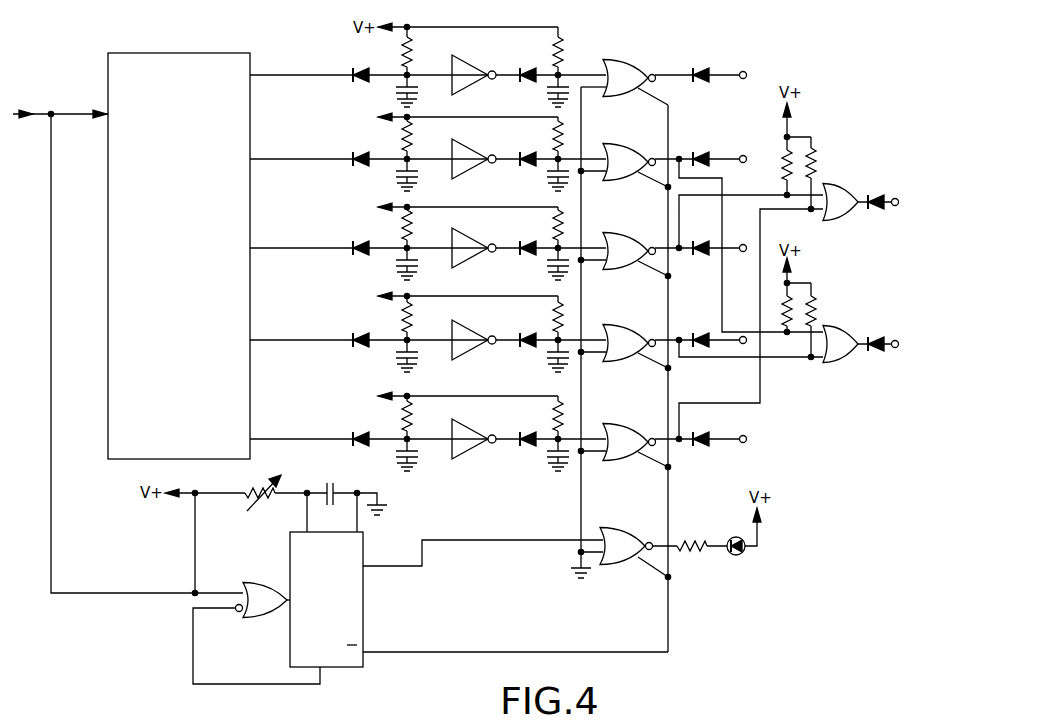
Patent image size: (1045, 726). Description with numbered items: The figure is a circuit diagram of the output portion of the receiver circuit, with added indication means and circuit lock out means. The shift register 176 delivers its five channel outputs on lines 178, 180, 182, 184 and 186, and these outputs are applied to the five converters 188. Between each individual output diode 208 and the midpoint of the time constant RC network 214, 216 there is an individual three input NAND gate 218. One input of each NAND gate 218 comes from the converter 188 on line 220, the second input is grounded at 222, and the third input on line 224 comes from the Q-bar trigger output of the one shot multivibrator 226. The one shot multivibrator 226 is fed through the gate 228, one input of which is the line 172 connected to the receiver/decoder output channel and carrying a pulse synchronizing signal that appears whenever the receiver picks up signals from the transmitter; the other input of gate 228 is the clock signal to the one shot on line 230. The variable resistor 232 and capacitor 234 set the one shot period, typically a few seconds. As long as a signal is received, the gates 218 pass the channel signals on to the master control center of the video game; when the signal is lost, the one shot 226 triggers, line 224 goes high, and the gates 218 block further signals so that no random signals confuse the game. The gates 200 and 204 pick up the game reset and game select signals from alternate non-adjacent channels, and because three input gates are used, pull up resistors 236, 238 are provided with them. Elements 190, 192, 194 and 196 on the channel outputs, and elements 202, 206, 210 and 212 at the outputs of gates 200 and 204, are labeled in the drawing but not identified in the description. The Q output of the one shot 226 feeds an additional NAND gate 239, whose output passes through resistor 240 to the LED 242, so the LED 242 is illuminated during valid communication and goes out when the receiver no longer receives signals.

The line 172 is at (74, 112).
The shift register 176 is at (107, 388).
The line 178 is at (307, 75).
The line 180 is at (300, 159).
The line 182 is at (300, 248).
The line 184 is at (300, 340).
The line 186 is at (300, 439).
The converter 188 is at (748, 75).
The output terminal 190 is at (752, 146).
The output terminal 192 is at (753, 241).
The output terminal 194 is at (741, 345).
The output terminal 196 is at (747, 439).
The gate 200 is at (827, 188).
The output terminal 202 is at (901, 186).
The gate 204 is at (827, 330).
The output terminal 206 is at (901, 328).
The output diode 208 is at (704, 68).
The diode 210 is at (874, 213).
The diode 212 is at (876, 355).
The time constant RC network 214 is at (561, 52).
The time constant RC network 216 is at (552, 92).
The three input NAND gate 218 is at (628, 56).
The line 220 is at (598, 68).
The ground 222 is at (598, 88).
The line 224 is at (663, 102).
The one shot multivibrator 226 is at (356, 672).
The gate 228 is at (258, 582).
The line 230 is at (248, 687).
The variable resistor 232 is at (251, 490).
The capacitor 234 is at (336, 486).
The pull up resistor 236 is at (816, 162).
The pull up resistor 238 is at (783, 152).
The additional NAND gate 239 is at (616, 564).
The resistor 240 is at (690, 554).
The LED 242 is at (746, 554).